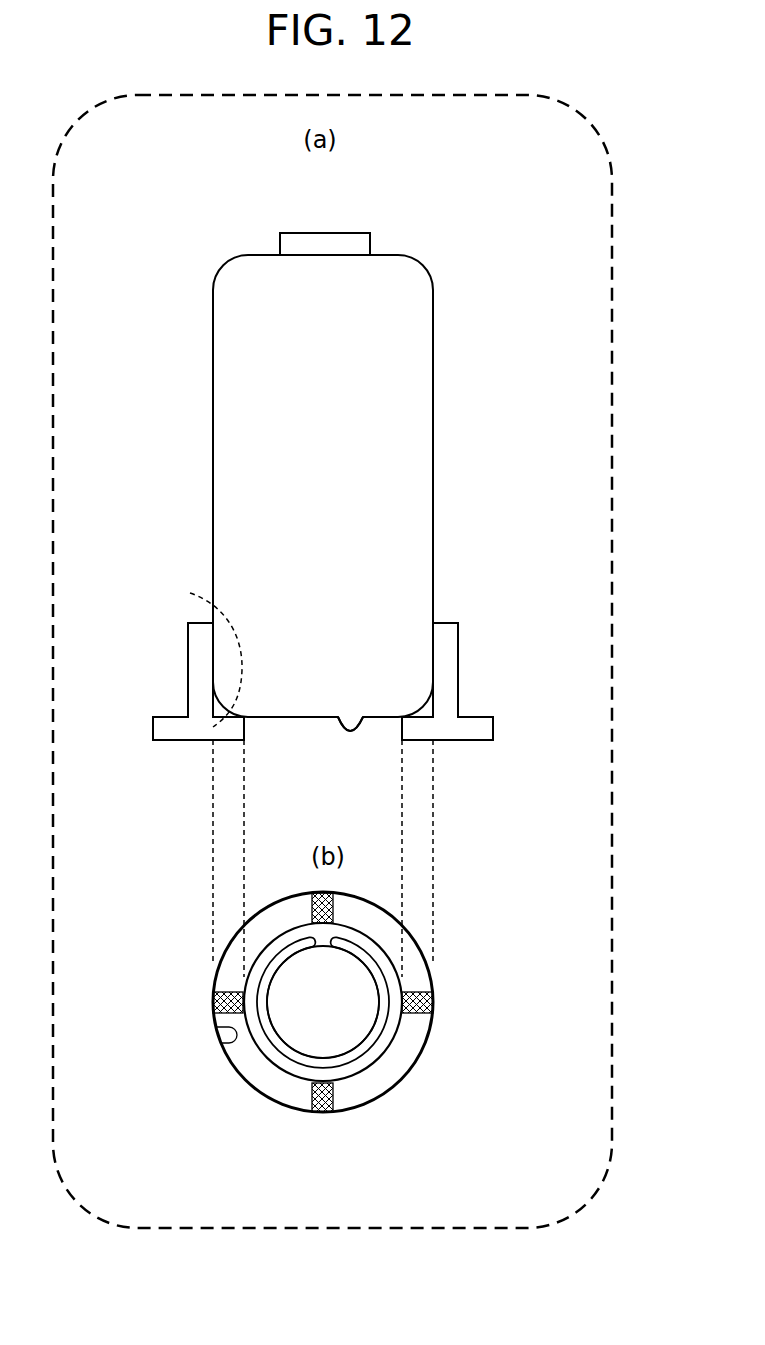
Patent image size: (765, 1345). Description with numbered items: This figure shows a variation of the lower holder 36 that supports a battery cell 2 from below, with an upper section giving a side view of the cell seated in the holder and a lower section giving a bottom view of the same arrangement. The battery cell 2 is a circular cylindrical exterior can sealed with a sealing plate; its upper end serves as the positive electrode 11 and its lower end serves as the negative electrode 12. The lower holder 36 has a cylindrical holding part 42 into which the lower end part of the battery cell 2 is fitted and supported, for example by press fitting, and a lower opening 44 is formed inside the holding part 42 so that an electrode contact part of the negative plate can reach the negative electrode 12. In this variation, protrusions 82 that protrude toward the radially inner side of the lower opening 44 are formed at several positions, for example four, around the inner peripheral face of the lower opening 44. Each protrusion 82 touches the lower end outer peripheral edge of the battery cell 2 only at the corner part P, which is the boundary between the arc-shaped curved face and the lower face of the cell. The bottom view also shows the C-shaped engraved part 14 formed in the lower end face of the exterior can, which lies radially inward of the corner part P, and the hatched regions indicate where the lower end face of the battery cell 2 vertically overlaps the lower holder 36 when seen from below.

The battery cell 2 is at (400, 480).
The positive electrode 11 is at (335, 232).
The negative electrode 12 is at (360, 717).
The C-shaped engraved part 14 is at (375, 1033).
The corner part P is at (243, 717).
The lower holder 36 is at (458, 660).
The holding part 42 is at (458, 692).
The lower opening 44 is at (192, 1062).
The protrusion 82 is at (230, 732).